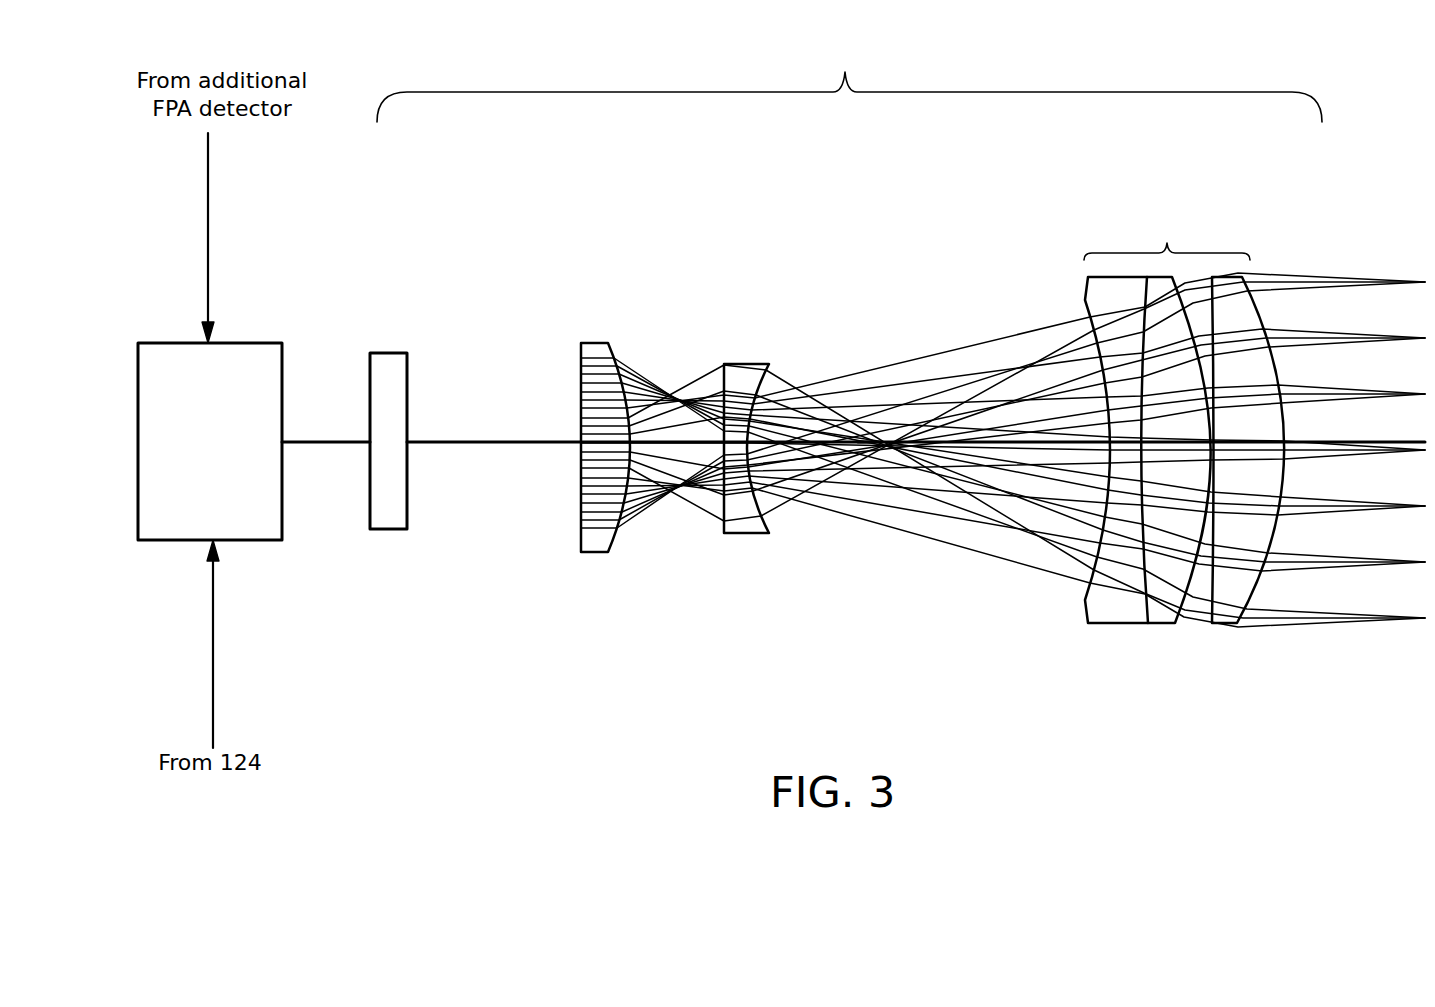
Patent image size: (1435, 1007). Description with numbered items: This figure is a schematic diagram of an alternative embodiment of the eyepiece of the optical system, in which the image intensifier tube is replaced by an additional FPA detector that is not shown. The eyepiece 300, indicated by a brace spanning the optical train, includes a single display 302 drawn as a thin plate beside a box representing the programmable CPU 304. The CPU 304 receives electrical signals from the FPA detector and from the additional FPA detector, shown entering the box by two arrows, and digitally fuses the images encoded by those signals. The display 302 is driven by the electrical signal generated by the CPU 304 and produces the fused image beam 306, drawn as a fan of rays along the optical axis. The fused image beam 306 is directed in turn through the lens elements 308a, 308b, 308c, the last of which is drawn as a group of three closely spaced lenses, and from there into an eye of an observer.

The eyepiece 300 is at (849, 79).
The display 302 is at (390, 353).
The programmable CPU 304 is at (210, 441).
The fused image beam 306 is at (865, 445).
The lens element 308a is at (605, 343).
The lens element 308b is at (752, 365).
The lens element 308c is at (1184, 421).